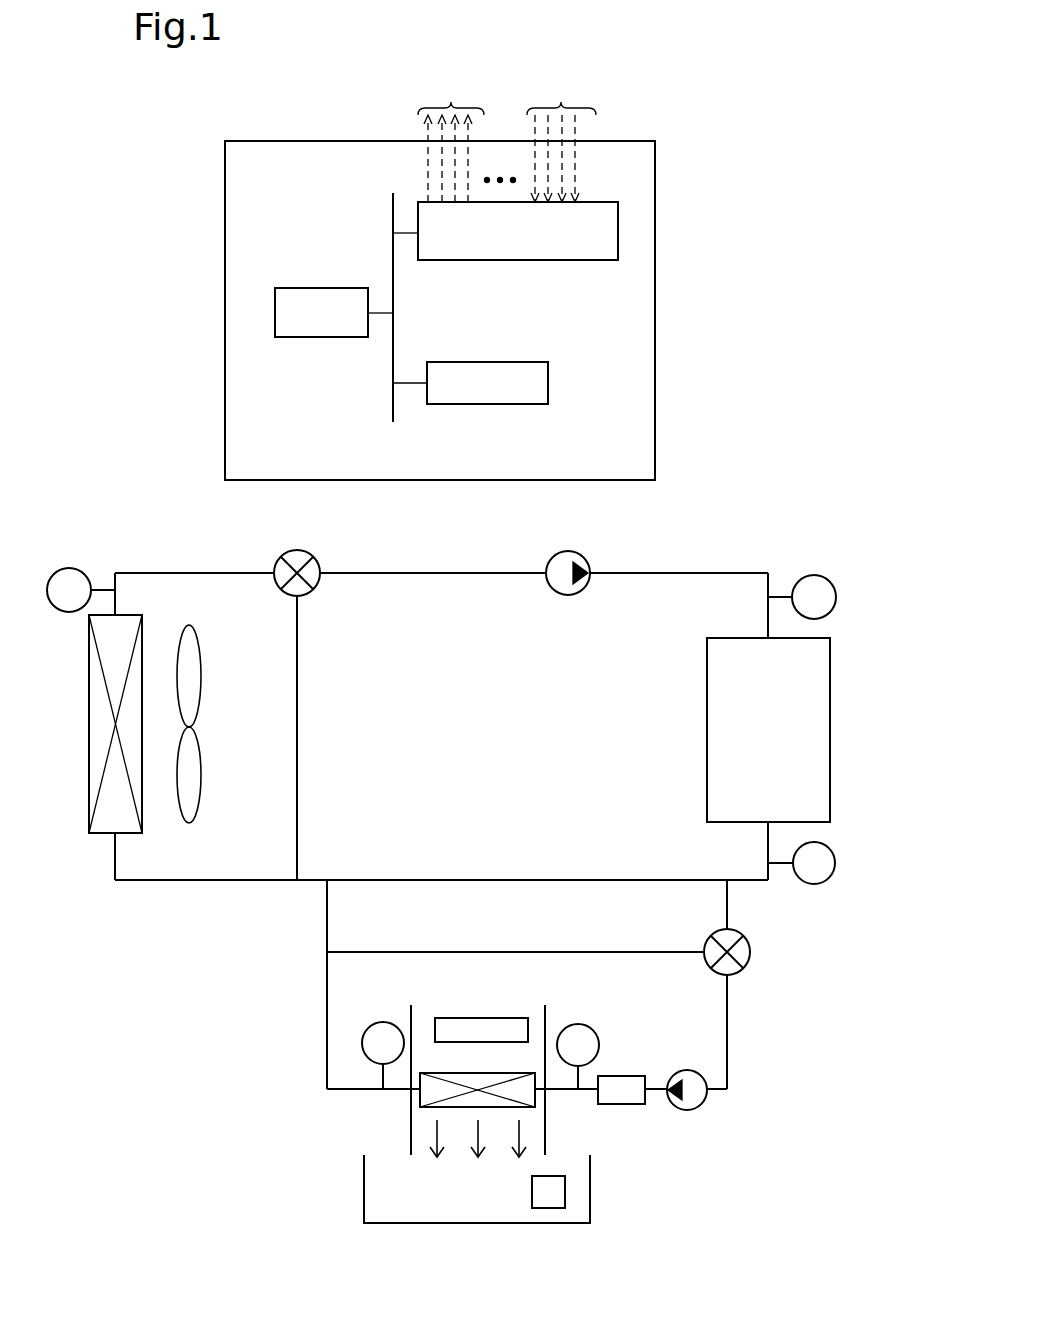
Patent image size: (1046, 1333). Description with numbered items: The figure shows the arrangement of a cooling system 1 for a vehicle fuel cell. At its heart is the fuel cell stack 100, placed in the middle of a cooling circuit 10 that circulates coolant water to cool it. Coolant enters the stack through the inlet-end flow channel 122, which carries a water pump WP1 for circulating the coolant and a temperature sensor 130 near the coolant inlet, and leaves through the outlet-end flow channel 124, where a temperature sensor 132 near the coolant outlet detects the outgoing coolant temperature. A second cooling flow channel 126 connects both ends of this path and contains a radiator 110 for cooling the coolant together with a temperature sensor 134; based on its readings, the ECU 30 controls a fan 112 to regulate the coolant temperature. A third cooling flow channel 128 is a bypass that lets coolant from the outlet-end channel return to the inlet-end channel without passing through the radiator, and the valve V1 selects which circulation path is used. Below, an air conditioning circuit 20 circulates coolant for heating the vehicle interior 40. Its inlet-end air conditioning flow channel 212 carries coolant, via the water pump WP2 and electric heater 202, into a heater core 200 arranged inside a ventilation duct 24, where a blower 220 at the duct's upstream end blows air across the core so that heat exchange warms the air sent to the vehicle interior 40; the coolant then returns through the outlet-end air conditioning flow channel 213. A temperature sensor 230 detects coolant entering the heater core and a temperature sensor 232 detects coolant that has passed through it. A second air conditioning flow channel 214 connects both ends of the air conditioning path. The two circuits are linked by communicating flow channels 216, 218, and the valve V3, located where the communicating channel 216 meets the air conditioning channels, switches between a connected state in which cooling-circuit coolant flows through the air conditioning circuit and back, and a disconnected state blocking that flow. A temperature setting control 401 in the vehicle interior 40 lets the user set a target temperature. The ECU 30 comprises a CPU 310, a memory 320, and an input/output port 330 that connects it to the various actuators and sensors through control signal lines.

The cooling system 1 is at (755, 82).
The cooling circuit 10 is at (123, 510).
The air conditioning circuit 20 is at (292, 1062).
The ventilation duct 24 is at (545, 1133).
The ECU 30 is at (646, 141).
The vehicle interior 40 is at (590, 1165).
The fuel cell stack 100 is at (707, 677).
The radiator 110 is at (100, 833).
The fan 112 is at (201, 636).
The inlet-end flow channel 122 is at (647, 573).
The outlet-end flow channel 124 is at (747, 880).
The second cooling flow channel 126 is at (160, 880).
The third cooling flow channel 128 is at (297, 707).
The temperature sensor 130 is at (814, 575).
The temperature sensor 132 is at (813, 884).
The temperature sensor 134 is at (69, 568).
The heater core 200 is at (484, 1073).
The electric heater 202 is at (620, 1076).
The inlet-end air conditioning flow channel 212 is at (727, 1028).
The outlet-end air conditioning flow channel 213 is at (327, 1000).
The second air conditioning flow channel 214 is at (480, 952).
The second communicating flow channel 216 is at (727, 907).
The first communicating flow channel 218 is at (327, 920).
The blower 220 is at (486, 1018).
The temperature sensor 230 is at (578, 1024).
The temperature sensor 232 is at (383, 1022).
The CPU 310 is at (306, 288).
The memory 320 is at (530, 362).
The input/output port 330 is at (588, 202).
The temperature setting control 401 is at (565, 1195).
The valve V1 is at (298, 550).
The valve V3 is at (743, 968).
The water pump WP1 is at (568, 551).
The water pump WP2 is at (688, 1110).